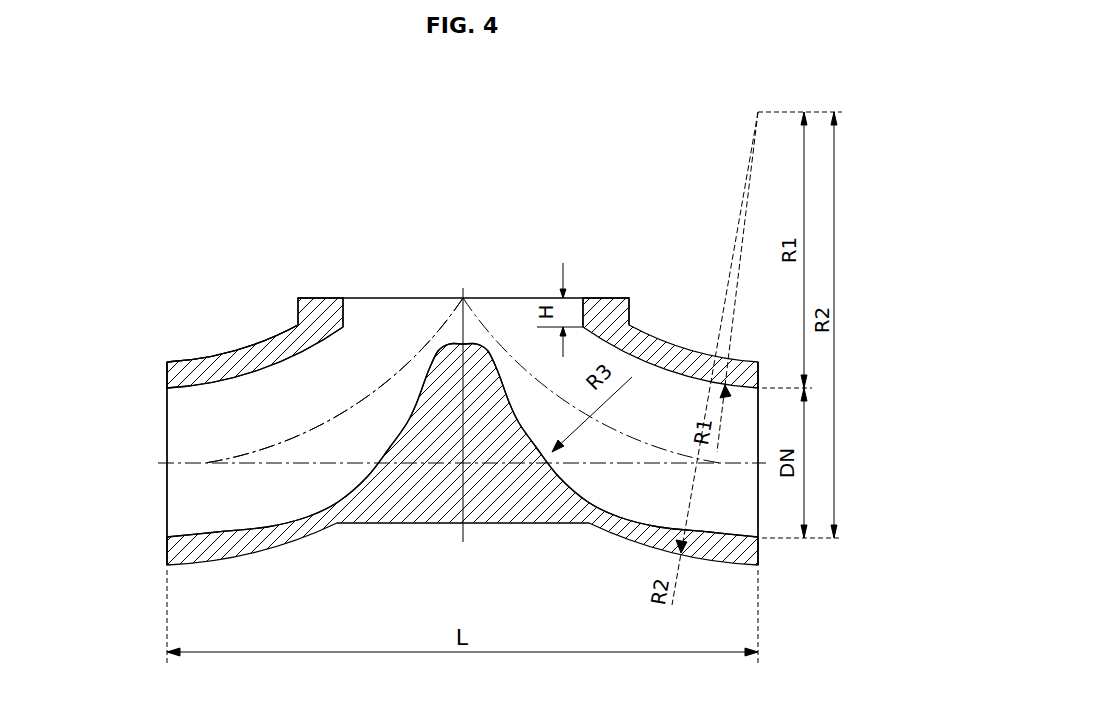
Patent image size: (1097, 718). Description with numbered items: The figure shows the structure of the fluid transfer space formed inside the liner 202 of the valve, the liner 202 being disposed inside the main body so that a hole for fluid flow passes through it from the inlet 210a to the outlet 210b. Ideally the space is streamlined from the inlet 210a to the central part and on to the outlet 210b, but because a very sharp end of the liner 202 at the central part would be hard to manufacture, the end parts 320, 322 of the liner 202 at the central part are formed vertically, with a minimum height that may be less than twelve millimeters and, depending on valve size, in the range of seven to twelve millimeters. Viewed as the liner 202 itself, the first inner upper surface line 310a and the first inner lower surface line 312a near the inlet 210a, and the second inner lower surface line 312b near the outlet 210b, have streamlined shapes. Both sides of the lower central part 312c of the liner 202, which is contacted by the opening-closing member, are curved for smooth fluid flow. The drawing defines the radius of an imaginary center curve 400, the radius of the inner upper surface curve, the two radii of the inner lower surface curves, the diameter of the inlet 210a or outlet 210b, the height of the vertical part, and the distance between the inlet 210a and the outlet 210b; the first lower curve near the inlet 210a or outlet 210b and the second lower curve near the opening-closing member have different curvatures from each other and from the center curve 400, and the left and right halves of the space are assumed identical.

The liner 202 is at (253, 357).
The first inner upper surface line 310a is at (217, 355).
The end part of the liner 320 is at (360, 307).
The end part of the liner 322 is at (576, 308).
The inlet 210a is at (157, 440).
The outlet 210b is at (768, 427).
The imaginary center curve 400 is at (247, 455).
The first inner lower surface line 312a is at (268, 527).
The second inner lower surface line 312b is at (612, 525).
The lower central part of the liner 312c is at (437, 355).